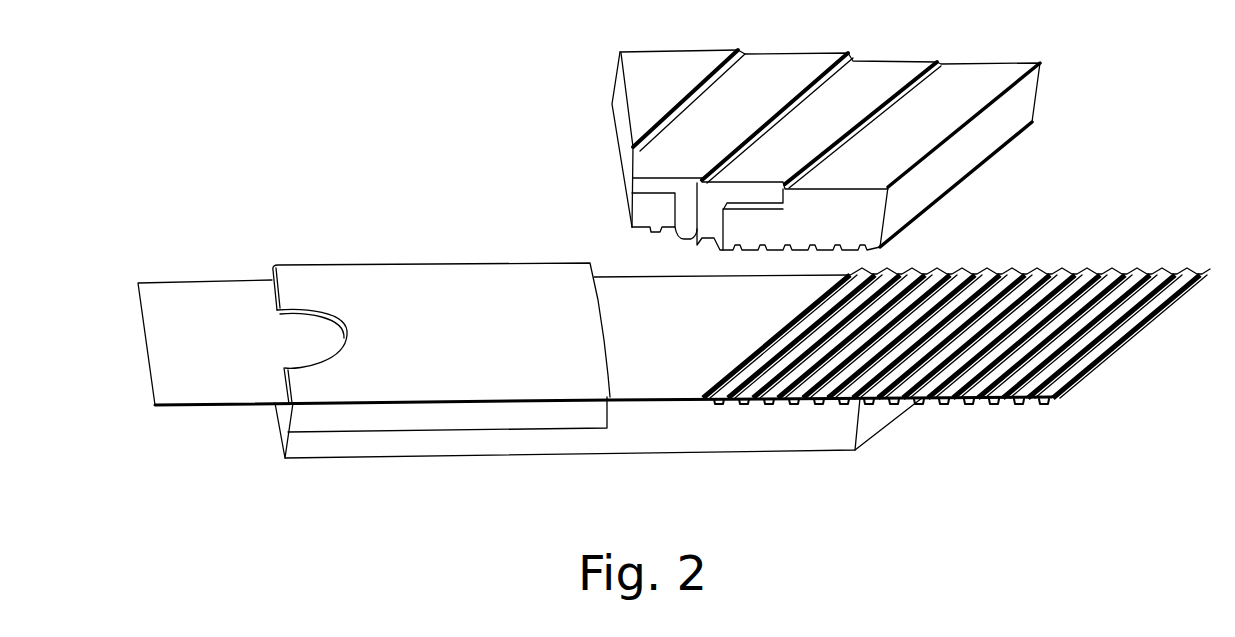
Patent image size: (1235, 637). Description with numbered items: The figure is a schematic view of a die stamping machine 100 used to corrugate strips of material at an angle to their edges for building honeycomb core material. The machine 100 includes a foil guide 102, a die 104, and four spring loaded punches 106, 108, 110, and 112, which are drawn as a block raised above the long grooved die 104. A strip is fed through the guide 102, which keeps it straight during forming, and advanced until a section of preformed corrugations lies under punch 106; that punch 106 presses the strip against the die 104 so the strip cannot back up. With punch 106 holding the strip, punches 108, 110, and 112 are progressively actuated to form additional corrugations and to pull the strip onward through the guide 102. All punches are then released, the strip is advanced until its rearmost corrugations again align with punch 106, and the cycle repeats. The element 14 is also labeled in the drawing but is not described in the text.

The die stamping machine 100 is at (437, 234).
The optical fiber ribbon / base plate 14 is at (183, 392).
The foil guide 102 is at (441, 333).
The die 104 is at (687, 442).
The spring loaded punch 106 is at (1023, 110).
The spring loaded punch 108 is at (884, 74).
The spring loaded punch 110 is at (779, 64).
The spring loaded punch 112 is at (671, 57).